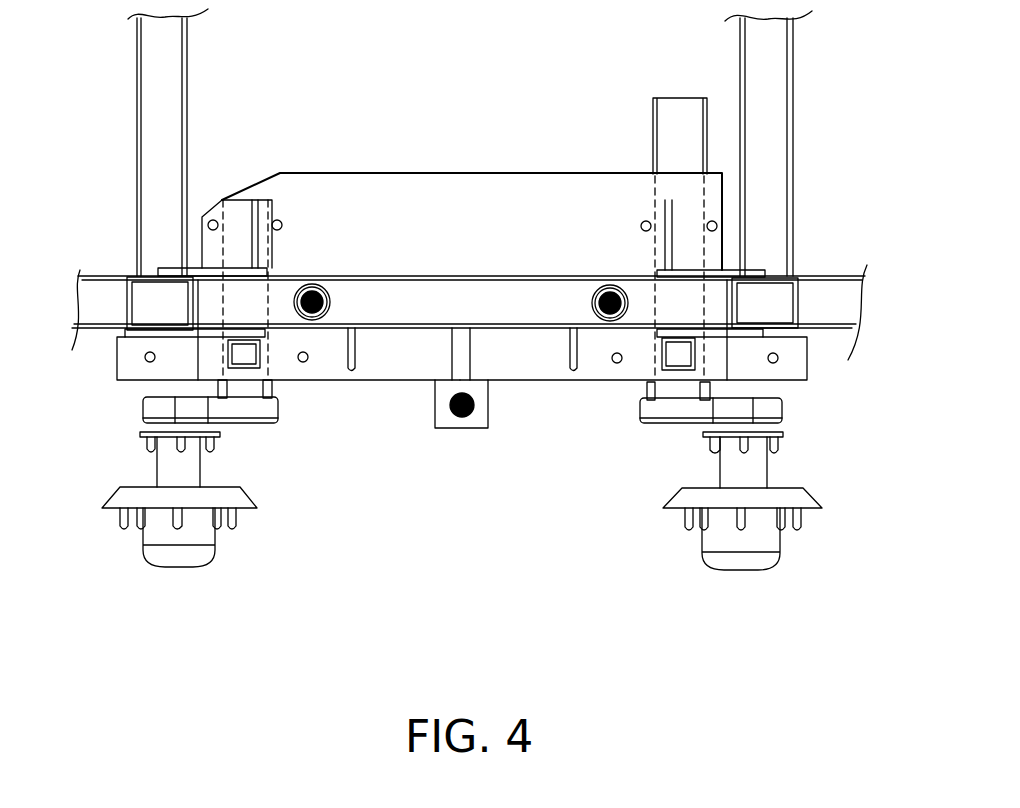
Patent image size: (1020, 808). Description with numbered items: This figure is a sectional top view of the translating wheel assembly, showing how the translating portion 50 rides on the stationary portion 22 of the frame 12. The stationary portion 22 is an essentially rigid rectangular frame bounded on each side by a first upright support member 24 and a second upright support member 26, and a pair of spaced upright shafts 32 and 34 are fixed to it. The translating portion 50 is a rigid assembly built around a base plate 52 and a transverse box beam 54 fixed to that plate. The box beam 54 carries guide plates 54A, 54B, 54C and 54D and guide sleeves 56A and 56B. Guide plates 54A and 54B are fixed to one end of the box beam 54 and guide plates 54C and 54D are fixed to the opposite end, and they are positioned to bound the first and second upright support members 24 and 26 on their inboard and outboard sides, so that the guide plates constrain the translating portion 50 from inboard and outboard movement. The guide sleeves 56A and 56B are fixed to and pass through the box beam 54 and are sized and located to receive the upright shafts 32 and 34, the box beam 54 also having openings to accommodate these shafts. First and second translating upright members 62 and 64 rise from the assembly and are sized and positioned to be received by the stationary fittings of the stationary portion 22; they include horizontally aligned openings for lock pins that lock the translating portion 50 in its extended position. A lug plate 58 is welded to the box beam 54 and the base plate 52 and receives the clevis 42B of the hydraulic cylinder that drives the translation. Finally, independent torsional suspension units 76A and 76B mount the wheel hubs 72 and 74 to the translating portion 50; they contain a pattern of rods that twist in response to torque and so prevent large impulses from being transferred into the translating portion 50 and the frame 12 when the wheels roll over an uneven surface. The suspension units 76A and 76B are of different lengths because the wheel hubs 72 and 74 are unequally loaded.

The frame 12 is at (170, 182).
The stationary portion 22 is at (806, 299).
The first upright support member 24 is at (172, 316).
The second upright support member 26 is at (777, 316).
The upright shaft 32 is at (330, 296).
The upright shaft 34 is at (602, 292).
The pivot pin 42B is at (474, 406).
The translating portion 50 is at (397, 165).
The base plate 52 is at (480, 249).
The transverse box beam 54 is at (480, 314).
The guide plate 54A is at (170, 345).
The guide plate 54B is at (195, 268).
The guide plate 54C is at (712, 350).
The guide plate 54D is at (728, 270).
The guide sleeve 56A is at (332, 300).
The guide sleeve 56B is at (592, 302).
The lug plate 58 is at (455, 357).
The first translating upright member 62 is at (263, 366).
The second translating upright member 64 is at (660, 357).
The wheel assembly 72 is at (245, 521).
The wheel assembly 74 is at (680, 526).
The torsional suspension unit 76A is at (285, 382).
The torsional suspension unit 76B is at (652, 127).